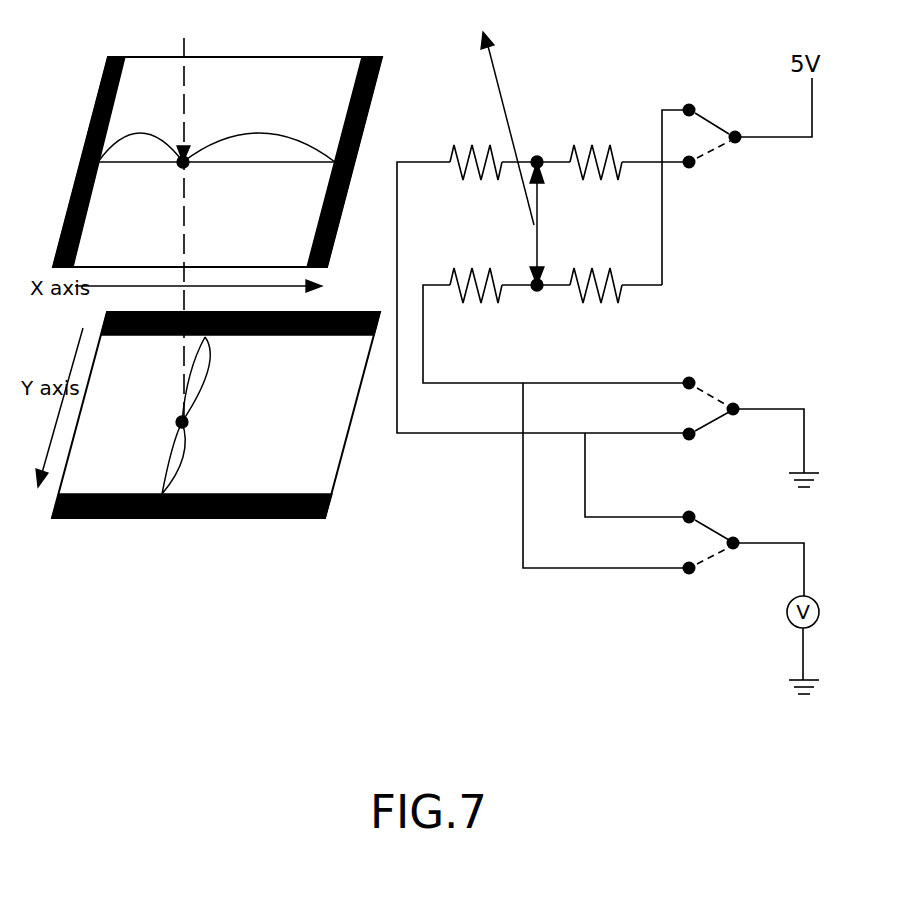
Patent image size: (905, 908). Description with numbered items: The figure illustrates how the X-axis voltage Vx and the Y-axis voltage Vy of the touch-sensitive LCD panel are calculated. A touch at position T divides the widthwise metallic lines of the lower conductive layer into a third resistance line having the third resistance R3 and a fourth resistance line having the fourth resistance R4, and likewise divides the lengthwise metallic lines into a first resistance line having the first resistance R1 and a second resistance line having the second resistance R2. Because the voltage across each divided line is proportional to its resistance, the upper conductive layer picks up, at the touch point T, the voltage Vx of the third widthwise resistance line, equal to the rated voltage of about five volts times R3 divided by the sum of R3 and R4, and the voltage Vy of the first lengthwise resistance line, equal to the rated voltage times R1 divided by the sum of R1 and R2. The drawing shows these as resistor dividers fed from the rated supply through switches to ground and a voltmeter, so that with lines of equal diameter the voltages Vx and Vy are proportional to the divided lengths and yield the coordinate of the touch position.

The first resistance R1 is at (402, 345).
The second resistance R2 is at (332, 381).
The third resistance R3 is at (402, 142).
The fourth resistance R4 is at (300, 142).
The voltage of X-axis Vx is at (361, 162).
The voltage of Y-axis Vy is at (346, 308).
The touch point / probe T is at (355, 217).